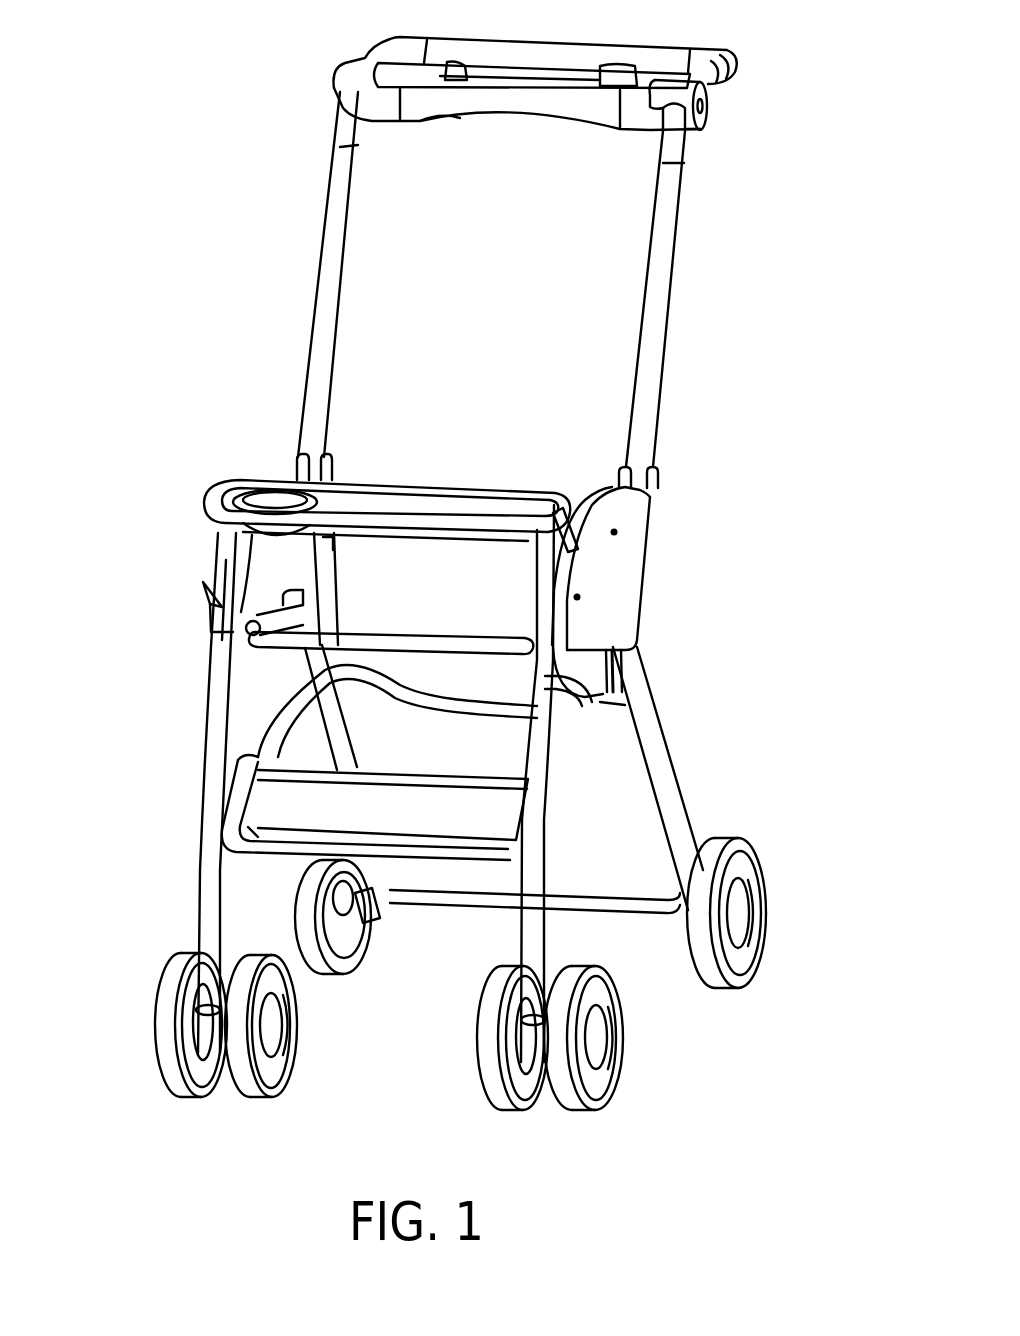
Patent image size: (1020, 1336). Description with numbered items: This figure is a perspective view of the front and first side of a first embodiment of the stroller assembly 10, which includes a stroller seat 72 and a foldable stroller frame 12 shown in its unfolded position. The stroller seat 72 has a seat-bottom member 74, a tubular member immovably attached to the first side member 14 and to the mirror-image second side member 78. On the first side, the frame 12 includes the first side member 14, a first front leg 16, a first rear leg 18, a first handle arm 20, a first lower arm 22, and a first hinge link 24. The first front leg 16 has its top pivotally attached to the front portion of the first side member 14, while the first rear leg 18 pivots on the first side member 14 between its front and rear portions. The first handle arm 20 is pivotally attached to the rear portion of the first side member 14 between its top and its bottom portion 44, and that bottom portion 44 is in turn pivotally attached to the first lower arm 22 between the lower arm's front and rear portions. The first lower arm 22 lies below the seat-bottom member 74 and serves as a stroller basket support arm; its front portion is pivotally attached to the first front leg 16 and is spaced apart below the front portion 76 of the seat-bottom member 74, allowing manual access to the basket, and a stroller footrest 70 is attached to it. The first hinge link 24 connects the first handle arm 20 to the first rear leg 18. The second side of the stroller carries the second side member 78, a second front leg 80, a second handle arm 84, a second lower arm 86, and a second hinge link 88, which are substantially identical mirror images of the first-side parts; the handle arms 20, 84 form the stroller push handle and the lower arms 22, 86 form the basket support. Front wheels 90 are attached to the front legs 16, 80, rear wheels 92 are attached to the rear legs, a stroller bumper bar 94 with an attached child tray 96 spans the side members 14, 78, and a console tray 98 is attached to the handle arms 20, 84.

The stroller assembly 10 is at (290, 188).
The stroller frame 12 is at (198, 692).
The first side member 14 is at (627, 571).
The first front leg 16 is at (540, 950).
The first rear leg 18 is at (673, 803).
The first handle arm 20 is at (663, 327).
The first lower arm 22 is at (577, 693).
The first hinge link 24 is at (627, 674).
The bottom portion of the first handle arm 44 is at (548, 683).
The stroller footrest 70 is at (433, 845).
The stroller seat 72 is at (256, 610).
The seat-bottom member 74 is at (320, 588).
The front portion of the seat-bottom member 76 is at (262, 640).
The second side member 78 is at (298, 560).
The second front leg 80 is at (198, 870).
The second handle arm 84 is at (317, 327).
The second lower arm 86 is at (238, 735).
The second hinge link 88 is at (303, 673).
The front wheels 90 is at (153, 1063).
The rear wheels 92 is at (293, 930).
The stroller bumper bar 94 is at (543, 531).
The child tray 96 is at (453, 478).
The console tray 98 is at (420, 122).